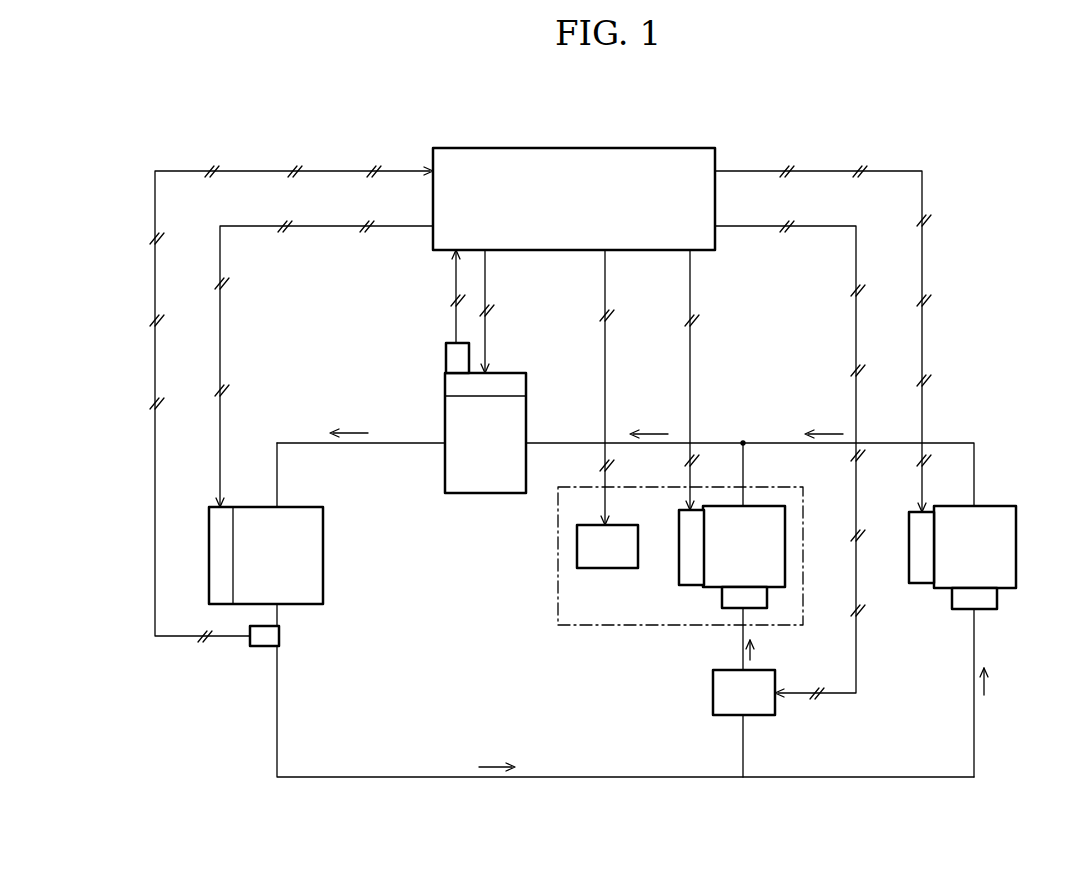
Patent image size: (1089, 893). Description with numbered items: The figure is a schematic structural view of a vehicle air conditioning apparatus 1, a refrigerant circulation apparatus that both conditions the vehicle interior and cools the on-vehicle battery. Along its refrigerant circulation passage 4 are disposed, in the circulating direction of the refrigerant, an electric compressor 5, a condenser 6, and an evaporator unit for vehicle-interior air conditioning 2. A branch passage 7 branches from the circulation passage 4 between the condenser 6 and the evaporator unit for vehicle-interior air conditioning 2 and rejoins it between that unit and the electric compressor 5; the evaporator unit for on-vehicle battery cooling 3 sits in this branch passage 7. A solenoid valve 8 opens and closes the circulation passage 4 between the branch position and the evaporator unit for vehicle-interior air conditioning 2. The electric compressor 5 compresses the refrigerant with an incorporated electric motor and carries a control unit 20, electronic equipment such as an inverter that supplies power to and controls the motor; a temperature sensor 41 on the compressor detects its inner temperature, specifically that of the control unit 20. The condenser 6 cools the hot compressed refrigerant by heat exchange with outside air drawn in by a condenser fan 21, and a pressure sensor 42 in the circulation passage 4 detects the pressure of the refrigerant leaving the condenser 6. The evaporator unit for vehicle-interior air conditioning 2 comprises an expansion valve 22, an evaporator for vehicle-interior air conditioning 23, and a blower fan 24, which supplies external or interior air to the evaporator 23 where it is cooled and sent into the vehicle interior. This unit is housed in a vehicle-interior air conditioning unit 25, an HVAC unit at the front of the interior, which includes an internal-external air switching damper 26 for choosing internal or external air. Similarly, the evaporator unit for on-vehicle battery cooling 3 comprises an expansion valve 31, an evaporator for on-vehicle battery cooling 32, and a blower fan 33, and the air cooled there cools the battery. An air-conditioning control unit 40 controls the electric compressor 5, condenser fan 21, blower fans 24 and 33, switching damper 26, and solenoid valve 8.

The vehicle air conditioning apparatus 1 is at (962, 160).
The evaporator unit for vehicle-interior air conditioning 2 is at (738, 595).
The evaporator unit for on-vehicle battery cooling 3 is at (983, 585).
The refrigerant circulation passage 4 is at (361, 777).
The electric compressor 5 is at (459, 454).
The condenser 6 is at (268, 555).
The branch passage 7 is at (918, 777).
The solenoid valve 8 is at (720, 716).
The control unit 20 is at (509, 373).
The condenser fan 21 is at (209, 556).
The expansion valve 22 is at (768, 601).
The evaporator for vehicle-interior air conditioning 23 is at (787, 522).
The blower fan 24 is at (679, 532).
The vehicle-interior air conditioning unit 25 is at (605, 627).
The internal-external air switching damper 26 is at (597, 570).
The expansion valve 31 is at (958, 611).
The evaporator for on-vehicle battery cooling 32 is at (1018, 520).
The blower fan 33 is at (919, 584).
The air-conditioning control unit 40 is at (690, 148).
The temperature sensor 41 is at (446, 357).
The pressure sensor 42 is at (262, 648).